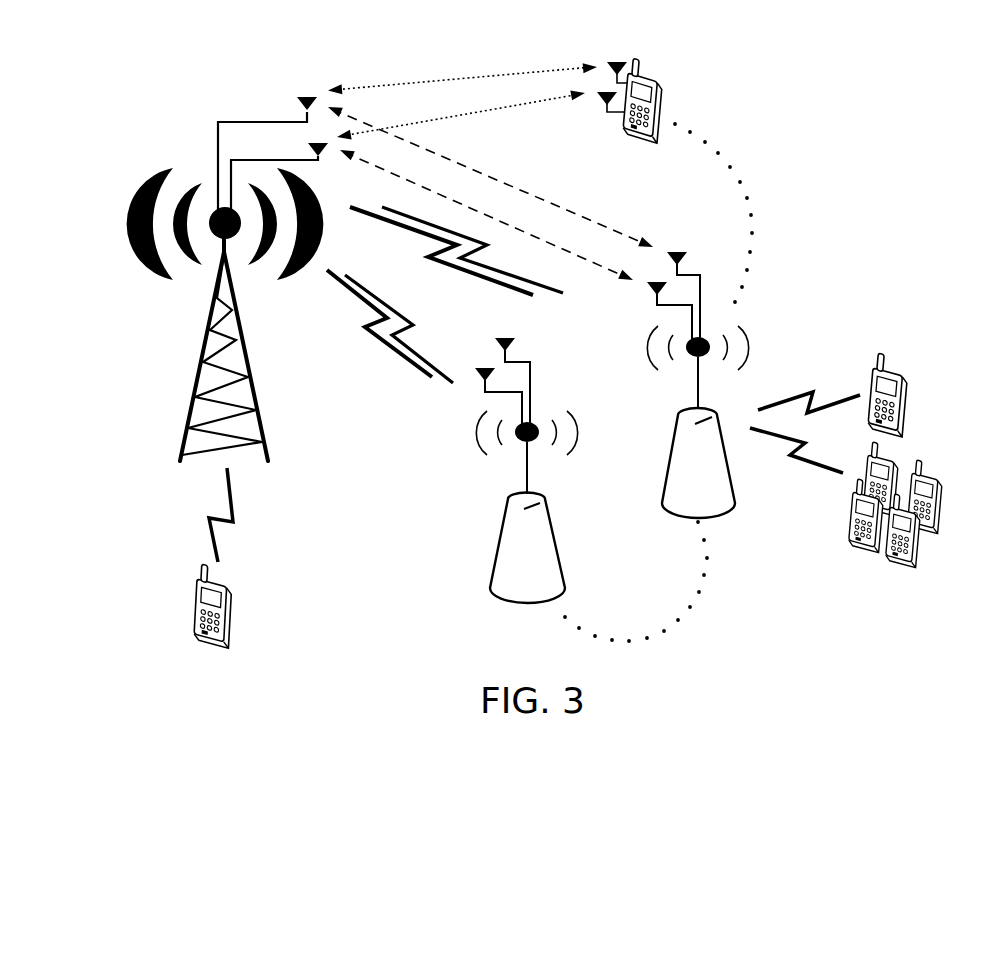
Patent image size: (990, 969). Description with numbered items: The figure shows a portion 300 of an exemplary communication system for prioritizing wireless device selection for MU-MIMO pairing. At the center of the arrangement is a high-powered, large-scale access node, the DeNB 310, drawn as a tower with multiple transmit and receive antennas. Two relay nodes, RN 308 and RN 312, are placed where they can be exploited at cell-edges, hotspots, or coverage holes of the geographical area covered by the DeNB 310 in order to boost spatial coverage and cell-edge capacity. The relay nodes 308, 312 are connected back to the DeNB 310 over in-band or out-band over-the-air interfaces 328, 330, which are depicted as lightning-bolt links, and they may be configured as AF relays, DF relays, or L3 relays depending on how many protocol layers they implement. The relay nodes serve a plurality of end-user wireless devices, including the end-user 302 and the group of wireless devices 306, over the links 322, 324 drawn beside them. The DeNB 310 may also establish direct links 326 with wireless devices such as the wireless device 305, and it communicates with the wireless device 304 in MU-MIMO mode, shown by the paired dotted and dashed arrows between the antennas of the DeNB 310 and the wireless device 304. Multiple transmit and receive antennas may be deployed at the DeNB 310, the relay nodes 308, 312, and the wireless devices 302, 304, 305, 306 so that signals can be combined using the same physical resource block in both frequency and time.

The portion 300 is at (114, 636).
The end-user 302 is at (895, 430).
The wireless device 304 is at (657, 78).
The wireless device 305 is at (238, 618).
The wireless devices 306 is at (905, 558).
The relay node 308 is at (666, 505).
The DeNB 310 is at (262, 391).
The relay node 312 is at (494, 590).
The wireless link 322 is at (795, 462).
The wireless link 324 is at (790, 396).
The direct link 326 is at (208, 528).
The over-the-air interface 328 is at (418, 233).
The over-the-air interface 330 is at (401, 350).